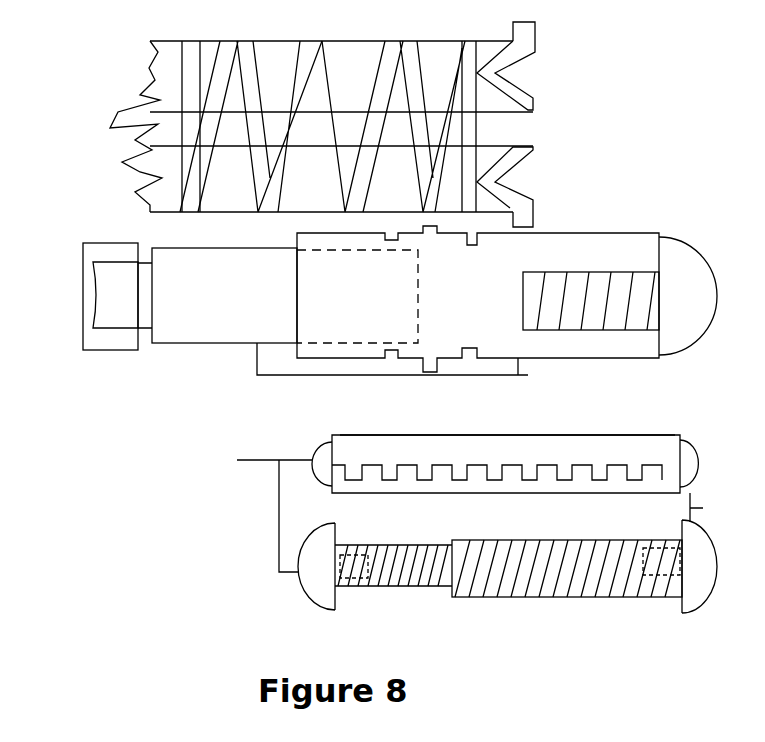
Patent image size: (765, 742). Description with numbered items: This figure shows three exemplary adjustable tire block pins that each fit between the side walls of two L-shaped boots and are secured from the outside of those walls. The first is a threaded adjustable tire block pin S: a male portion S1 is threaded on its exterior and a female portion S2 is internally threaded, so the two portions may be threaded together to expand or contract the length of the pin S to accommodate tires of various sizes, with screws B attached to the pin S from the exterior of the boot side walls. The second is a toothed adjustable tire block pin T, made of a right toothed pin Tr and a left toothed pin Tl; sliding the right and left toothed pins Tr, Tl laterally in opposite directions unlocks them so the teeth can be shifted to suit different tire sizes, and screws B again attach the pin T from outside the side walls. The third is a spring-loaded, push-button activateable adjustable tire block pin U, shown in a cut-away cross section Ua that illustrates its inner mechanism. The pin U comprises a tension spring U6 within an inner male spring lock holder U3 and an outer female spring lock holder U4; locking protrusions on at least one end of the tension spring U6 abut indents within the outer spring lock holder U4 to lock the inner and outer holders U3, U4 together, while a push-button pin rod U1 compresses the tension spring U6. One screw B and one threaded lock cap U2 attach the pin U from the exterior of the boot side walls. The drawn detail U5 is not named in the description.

The cut-away cross section Ua is at (150, 148).
The push-button pin rod U1 is at (112, 302).
The threaded lock cap U2 is at (110, 350).
The inner spring lock holder U3 is at (213, 343).
The outer spring lock holder U4 is at (613, 233).
The cutting teeth U5 is at (520, 52).
The tension spring U6 is at (267, 210).
The adjustable tire block pin U is at (406, 370).
The adjustable tire block pin T is at (418, 433).
The right toothed pin Tr is at (578, 442).
The left toothed pin Tl is at (610, 485).
The screw B is at (467, 507).
The adjustable tire block pin S is at (422, 545).
The male portion S1 is at (388, 588).
The female portion S2 is at (575, 593).